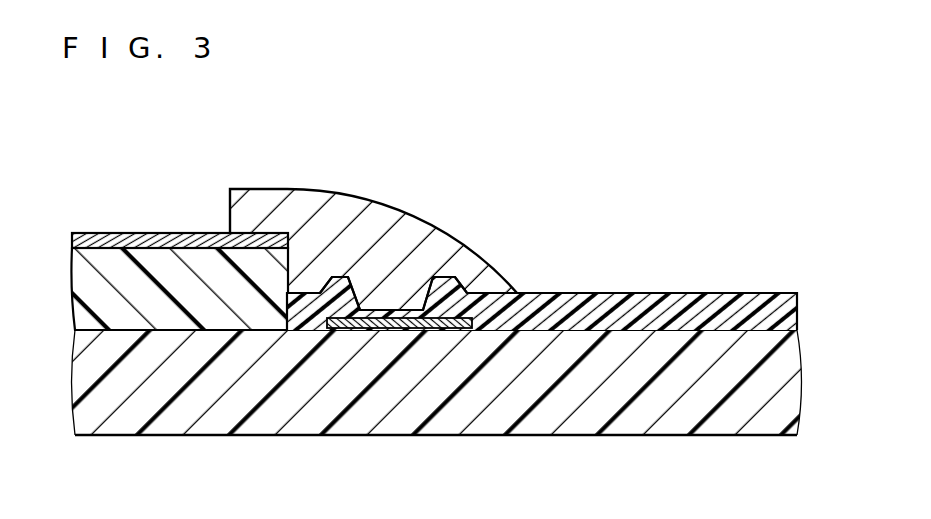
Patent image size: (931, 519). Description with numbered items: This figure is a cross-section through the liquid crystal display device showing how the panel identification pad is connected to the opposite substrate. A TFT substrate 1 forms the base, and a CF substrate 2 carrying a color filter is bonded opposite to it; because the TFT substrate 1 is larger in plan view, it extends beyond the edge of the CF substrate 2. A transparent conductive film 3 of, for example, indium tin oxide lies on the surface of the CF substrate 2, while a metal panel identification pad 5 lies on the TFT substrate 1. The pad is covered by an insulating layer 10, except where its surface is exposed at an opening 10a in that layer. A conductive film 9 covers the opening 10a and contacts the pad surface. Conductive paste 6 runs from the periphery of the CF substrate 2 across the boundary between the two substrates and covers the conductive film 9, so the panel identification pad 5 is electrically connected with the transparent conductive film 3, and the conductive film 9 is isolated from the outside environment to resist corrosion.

The TFT substrate 1 is at (789, 380).
The CF substrate 2 is at (88, 292).
The transparent conductive film 3 is at (72, 237).
The panel identification pad 5 is at (380, 330).
The conductive paste 6 is at (388, 223).
The conductive film 9 is at (447, 282).
The insulating layer 10 is at (795, 312).
The opening 10a is at (357, 290).